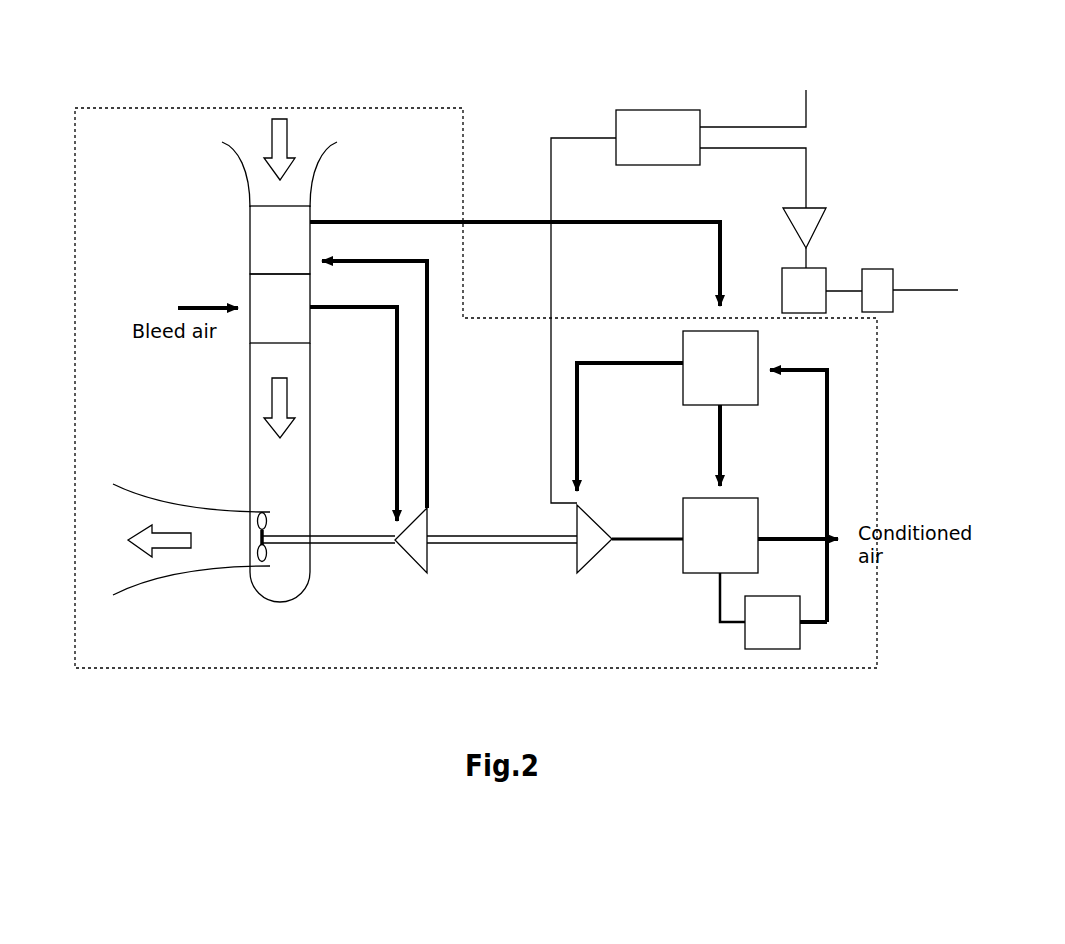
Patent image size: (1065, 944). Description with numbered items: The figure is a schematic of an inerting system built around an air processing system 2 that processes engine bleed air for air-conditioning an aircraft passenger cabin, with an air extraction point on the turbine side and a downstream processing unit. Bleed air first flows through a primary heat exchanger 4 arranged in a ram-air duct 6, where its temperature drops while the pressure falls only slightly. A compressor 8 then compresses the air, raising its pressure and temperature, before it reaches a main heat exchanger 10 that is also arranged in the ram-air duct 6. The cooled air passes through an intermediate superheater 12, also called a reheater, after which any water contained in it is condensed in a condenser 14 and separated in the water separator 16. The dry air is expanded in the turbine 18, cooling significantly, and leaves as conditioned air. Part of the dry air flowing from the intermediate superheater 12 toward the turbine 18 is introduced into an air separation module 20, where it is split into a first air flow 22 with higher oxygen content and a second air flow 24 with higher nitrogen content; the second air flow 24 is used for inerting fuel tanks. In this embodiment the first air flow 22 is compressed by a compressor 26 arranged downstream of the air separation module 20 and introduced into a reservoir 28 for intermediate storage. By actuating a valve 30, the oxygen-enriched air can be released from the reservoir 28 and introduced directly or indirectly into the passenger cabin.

The air processing system 2 is at (995, 414).
The primary heat exchanger 4 is at (252, 343).
The ram-air duct 6 is at (255, 476).
The compressor 8 is at (395, 543).
The main heat exchanger 10 is at (255, 222).
The intermediate superheater 12 is at (695, 333).
The condenser 14 is at (747, 513).
The water separator 16 is at (767, 637).
The turbine 18 is at (602, 543).
The air separation module 20 is at (662, 120).
The first air flow 22 is at (806, 172).
The second air flow 24 is at (808, 100).
The compressor 26 is at (825, 217).
The reservoir 28 is at (788, 270).
The valve 30 is at (880, 308).